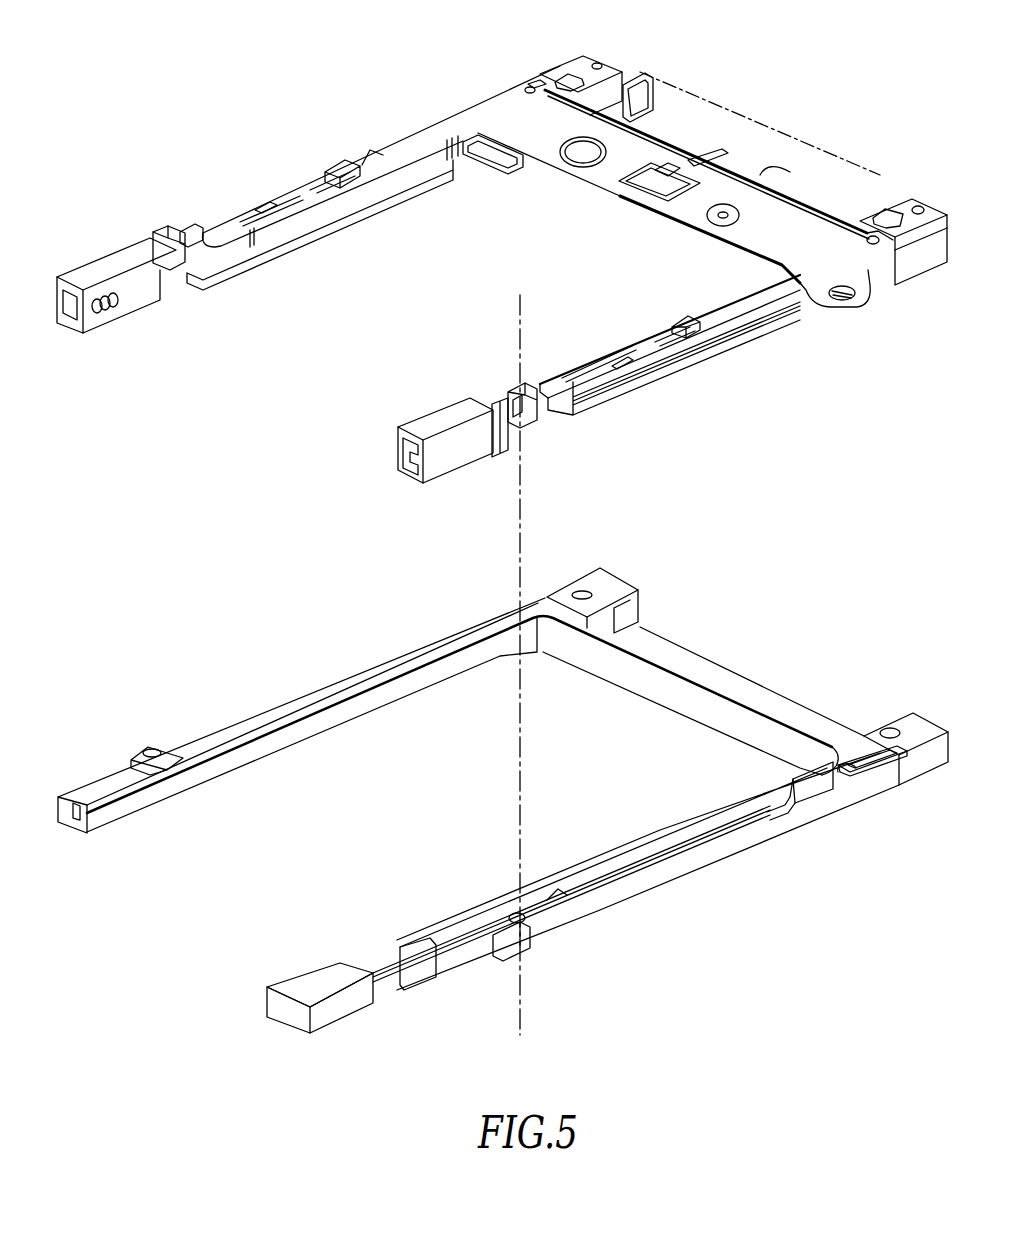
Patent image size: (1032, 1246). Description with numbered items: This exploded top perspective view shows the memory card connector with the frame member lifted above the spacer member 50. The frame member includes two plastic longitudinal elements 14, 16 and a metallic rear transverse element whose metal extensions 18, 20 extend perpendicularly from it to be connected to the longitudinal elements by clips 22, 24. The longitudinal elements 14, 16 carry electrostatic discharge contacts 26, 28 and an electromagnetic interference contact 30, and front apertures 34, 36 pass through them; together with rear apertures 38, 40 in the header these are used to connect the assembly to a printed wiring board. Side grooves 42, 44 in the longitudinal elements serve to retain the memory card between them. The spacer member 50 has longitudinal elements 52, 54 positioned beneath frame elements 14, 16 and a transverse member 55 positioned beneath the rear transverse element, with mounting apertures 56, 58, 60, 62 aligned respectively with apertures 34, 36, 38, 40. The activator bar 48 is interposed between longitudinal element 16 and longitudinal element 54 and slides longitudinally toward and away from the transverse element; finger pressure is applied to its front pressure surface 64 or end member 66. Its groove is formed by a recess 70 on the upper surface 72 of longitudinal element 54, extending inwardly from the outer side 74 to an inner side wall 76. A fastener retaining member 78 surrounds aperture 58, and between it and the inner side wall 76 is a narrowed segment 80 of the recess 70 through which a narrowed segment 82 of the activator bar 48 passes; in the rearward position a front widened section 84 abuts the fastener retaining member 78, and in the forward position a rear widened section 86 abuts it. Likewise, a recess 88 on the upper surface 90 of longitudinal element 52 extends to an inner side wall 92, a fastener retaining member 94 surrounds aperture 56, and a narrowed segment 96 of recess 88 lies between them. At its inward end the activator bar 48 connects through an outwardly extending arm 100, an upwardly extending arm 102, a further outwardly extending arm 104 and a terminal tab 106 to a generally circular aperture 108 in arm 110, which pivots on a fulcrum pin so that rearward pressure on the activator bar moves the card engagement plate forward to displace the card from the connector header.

The longitudinal element 14 is at (377, 187).
The longitudinal element 16 is at (760, 317).
The metal extension 18 is at (408, 138).
The metal extension 20 is at (750, 290).
The clip 22 is at (340, 158).
The clip 24 is at (682, 316).
The electrostatic discharge contact 26 is at (275, 200).
The electrostatic discharge contact 28 is at (593, 350).
The electromagnetic interference contact 30 is at (113, 297).
The front aperture 34 is at (152, 232).
The front aperture 36 is at (517, 383).
The rear aperture 38 is at (578, 62).
The rear aperture 40 is at (897, 217).
The side groove 42 is at (77, 310).
The side groove 44 is at (385, 455).
The activator bar 48 is at (647, 167).
The spacer member 50 is at (702, 634).
The longitudinal element 52 is at (300, 737).
The longitudinal element 54 is at (643, 886).
The transverse member 55 is at (752, 672).
The mounting aperture 56 is at (133, 752).
The mounting aperture 58 is at (507, 958).
The mounting aperture 60 is at (597, 597).
The mounting aperture 62 is at (905, 718).
The front pressure surface 64 is at (280, 1007).
The end member 66 is at (300, 967).
The recess 70 is at (897, 760).
The upper surface 72 is at (891, 728).
The outer side 74 is at (703, 857).
The inner side wall 76 is at (677, 830).
The fastener retaining member 78 is at (530, 943).
The narrowed segment 80 is at (567, 865).
The narrowed segment 82 is at (470, 915).
The front widened section 84 is at (560, 903).
The rear widened section 86 is at (443, 953).
The recess 88 is at (300, 700).
The upper surface 90 is at (597, 580).
The inner side wall 92 is at (417, 650).
The fastener retaining member 94 is at (150, 748).
The narrowed segment 96 is at (173, 750).
The outwardly extending arm 100 is at (783, 800).
The upwardly extending arm 102 is at (813, 800).
The outwardly extending arm 104 is at (820, 767).
The terminal tab 106 is at (877, 767).
The circularly shaped aperture 108 is at (878, 290).
The arm 110 is at (713, 193).